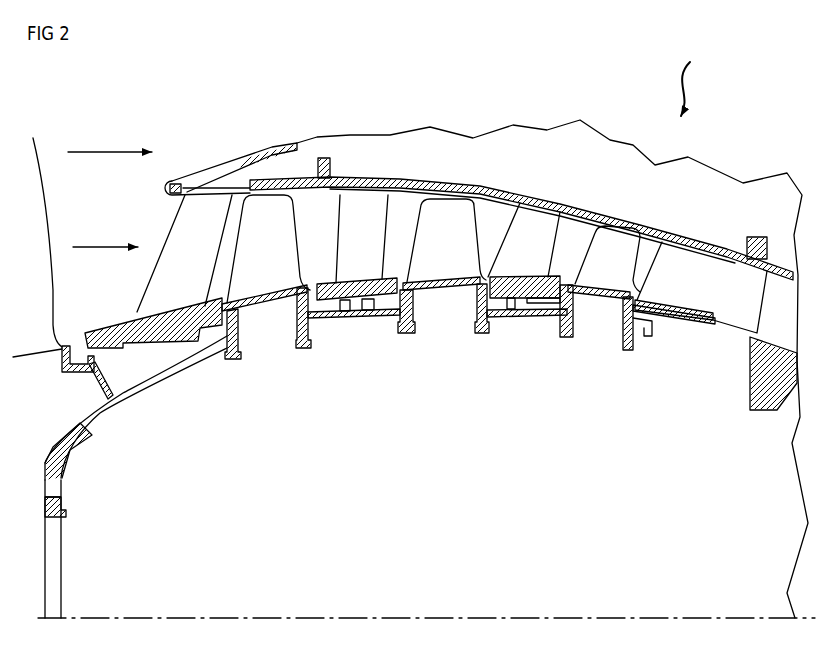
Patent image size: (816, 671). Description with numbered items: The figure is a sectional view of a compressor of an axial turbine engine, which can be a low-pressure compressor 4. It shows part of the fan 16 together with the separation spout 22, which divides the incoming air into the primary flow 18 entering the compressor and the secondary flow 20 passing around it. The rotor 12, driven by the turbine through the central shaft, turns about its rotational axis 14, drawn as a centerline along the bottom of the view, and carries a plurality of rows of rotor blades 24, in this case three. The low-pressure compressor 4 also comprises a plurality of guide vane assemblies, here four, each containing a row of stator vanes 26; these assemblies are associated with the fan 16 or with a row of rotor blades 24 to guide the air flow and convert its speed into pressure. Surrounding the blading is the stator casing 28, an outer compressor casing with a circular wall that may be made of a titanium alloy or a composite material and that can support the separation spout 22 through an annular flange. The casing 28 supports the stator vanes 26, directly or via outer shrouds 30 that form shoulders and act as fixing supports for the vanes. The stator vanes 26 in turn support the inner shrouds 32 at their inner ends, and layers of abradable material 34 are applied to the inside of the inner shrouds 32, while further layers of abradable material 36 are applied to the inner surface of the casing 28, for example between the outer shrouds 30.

The low-pressure compressor 4 is at (695, 78).
The rotor 12 is at (62, 478).
The rotational axis 14 is at (512, 618).
The fan 16 is at (40, 260).
The primary flow 18 is at (105, 233).
The secondary flow 20 is at (110, 138).
The separation spout 22 is at (167, 189).
The rotor blades 24 is at (433, 249).
The stator vanes 26 is at (452, 264).
The casing 28 is at (512, 190).
The outer shrouds 30 is at (97, 333).
The inner shrouds 32 is at (330, 283).
The layers of abradable material 34 is at (364, 294).
The layers of abradable material 36 is at (452, 187).